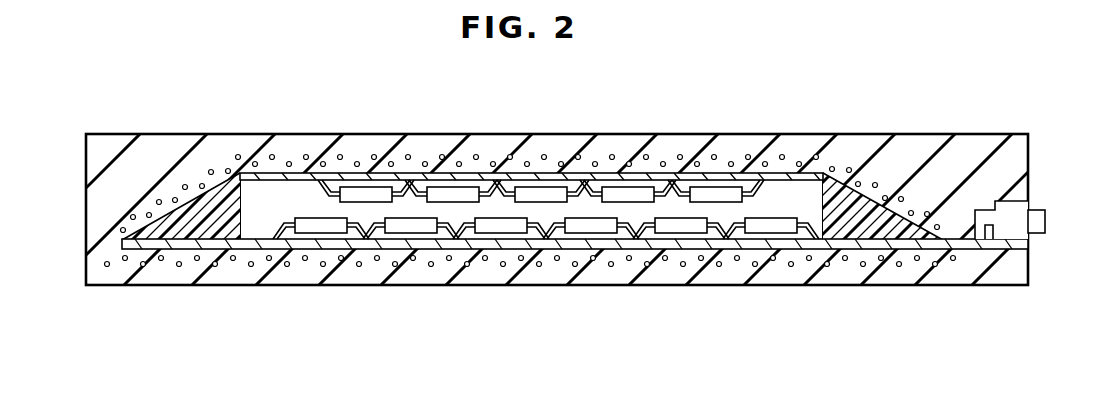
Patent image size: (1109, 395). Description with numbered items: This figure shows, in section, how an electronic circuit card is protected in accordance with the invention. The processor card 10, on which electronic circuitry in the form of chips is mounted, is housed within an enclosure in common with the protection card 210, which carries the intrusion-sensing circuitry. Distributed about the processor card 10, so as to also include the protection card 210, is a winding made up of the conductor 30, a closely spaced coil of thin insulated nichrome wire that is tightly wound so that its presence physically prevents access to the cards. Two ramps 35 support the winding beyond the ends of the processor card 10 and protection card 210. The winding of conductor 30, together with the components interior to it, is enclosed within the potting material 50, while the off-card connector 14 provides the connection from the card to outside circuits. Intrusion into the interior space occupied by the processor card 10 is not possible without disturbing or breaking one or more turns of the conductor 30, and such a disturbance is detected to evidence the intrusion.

The potting material 50 is at (289, 134).
The protection card 210 is at (408, 174).
The conductor 30 is at (616, 146).
The off-card connector 14 is at (1050, 206).
The ramps 35 is at (172, 234).
The processor card 10 is at (492, 244).